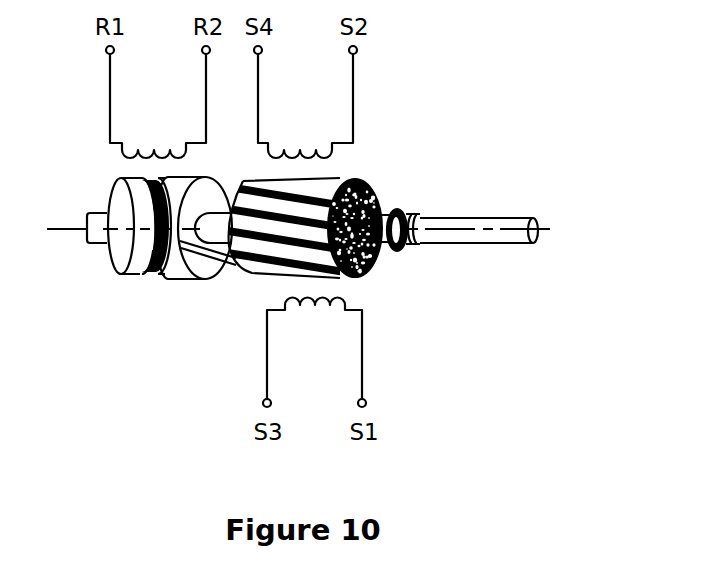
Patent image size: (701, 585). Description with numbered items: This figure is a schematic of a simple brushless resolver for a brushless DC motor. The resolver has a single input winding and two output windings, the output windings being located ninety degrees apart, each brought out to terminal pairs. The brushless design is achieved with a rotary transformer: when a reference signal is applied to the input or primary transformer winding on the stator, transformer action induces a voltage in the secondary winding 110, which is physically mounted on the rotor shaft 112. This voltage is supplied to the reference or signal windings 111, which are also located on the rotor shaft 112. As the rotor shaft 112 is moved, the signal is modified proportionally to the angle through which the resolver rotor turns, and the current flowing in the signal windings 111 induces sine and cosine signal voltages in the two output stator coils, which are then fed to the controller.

The secondary winding 110 is at (133, 245).
The reference or signal windings 111 is at (363, 272).
The rotor shaft 112 is at (496, 214).